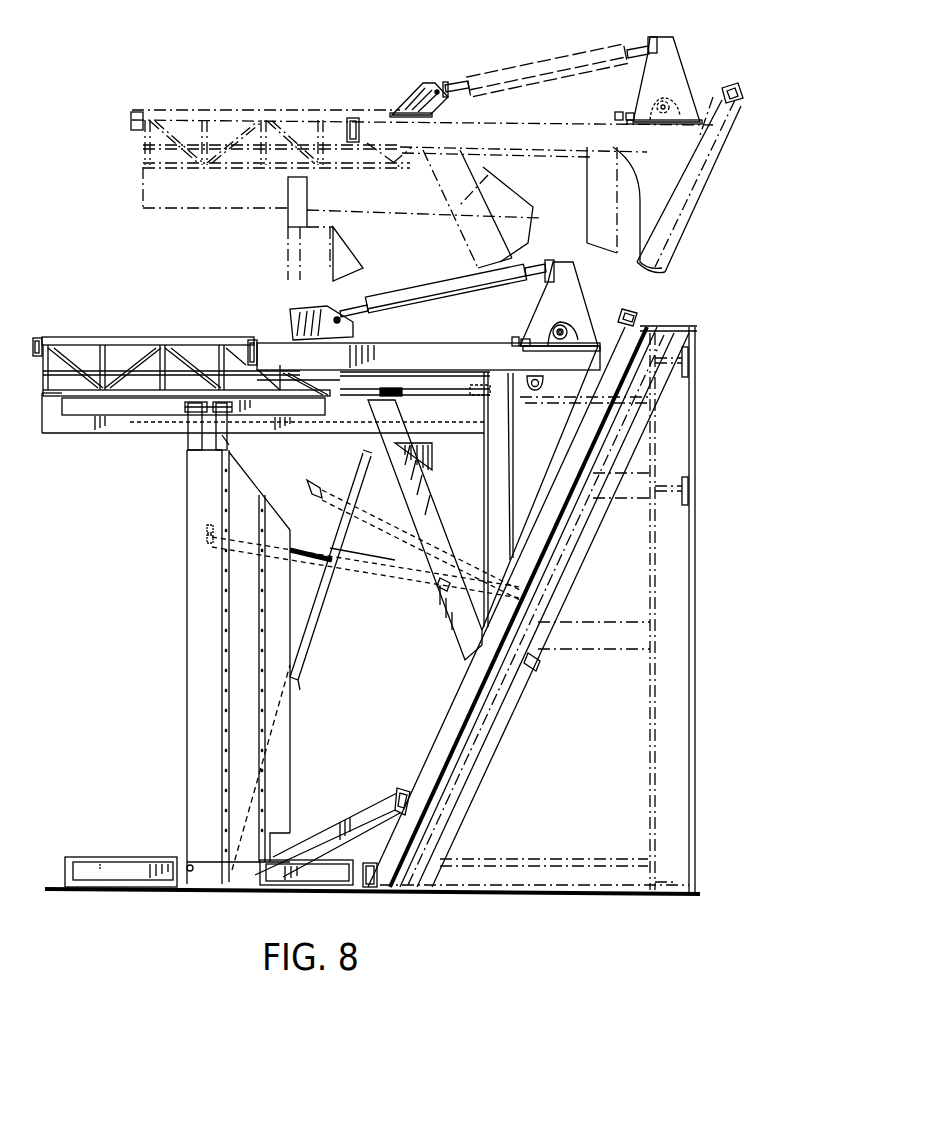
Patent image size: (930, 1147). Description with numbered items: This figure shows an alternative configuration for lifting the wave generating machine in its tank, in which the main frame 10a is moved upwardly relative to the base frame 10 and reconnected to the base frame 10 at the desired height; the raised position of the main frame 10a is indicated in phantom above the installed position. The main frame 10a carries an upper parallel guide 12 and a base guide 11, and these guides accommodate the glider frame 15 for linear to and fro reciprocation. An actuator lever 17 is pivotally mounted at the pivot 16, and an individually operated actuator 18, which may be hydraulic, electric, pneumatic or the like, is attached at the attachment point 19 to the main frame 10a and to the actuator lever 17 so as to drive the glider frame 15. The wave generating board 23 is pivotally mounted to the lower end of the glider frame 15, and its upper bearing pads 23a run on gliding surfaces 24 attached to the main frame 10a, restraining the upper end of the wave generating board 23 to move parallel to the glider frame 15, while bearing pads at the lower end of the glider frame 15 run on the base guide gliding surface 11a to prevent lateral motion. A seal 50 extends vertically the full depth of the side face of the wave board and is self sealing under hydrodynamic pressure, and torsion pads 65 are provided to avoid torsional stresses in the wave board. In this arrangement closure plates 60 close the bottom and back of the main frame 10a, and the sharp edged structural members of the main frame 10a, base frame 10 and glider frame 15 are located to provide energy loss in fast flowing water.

The base frame 10 is at (557, 880).
The main frame 10a is at (370, 866).
The base guide 11 is at (132, 857).
The base guide gliding surface 11a is at (124, 870).
The upper parallel guide 12 is at (134, 148).
The glider frame 15 is at (347, 631).
The pivot mounting 16 is at (655, 105).
The actuator lever 17 is at (690, 70).
The actuator 18 is at (538, 82).
The actuator attachment point 19 is at (414, 80).
The wave generating board 23 is at (187, 622).
The upper bearing pad 23a is at (187, 405).
The gliding surface 24 is at (112, 407).
The seal 50 is at (236, 654).
The closure plate 60 is at (281, 885).
The torsion pad 65 is at (222, 443).